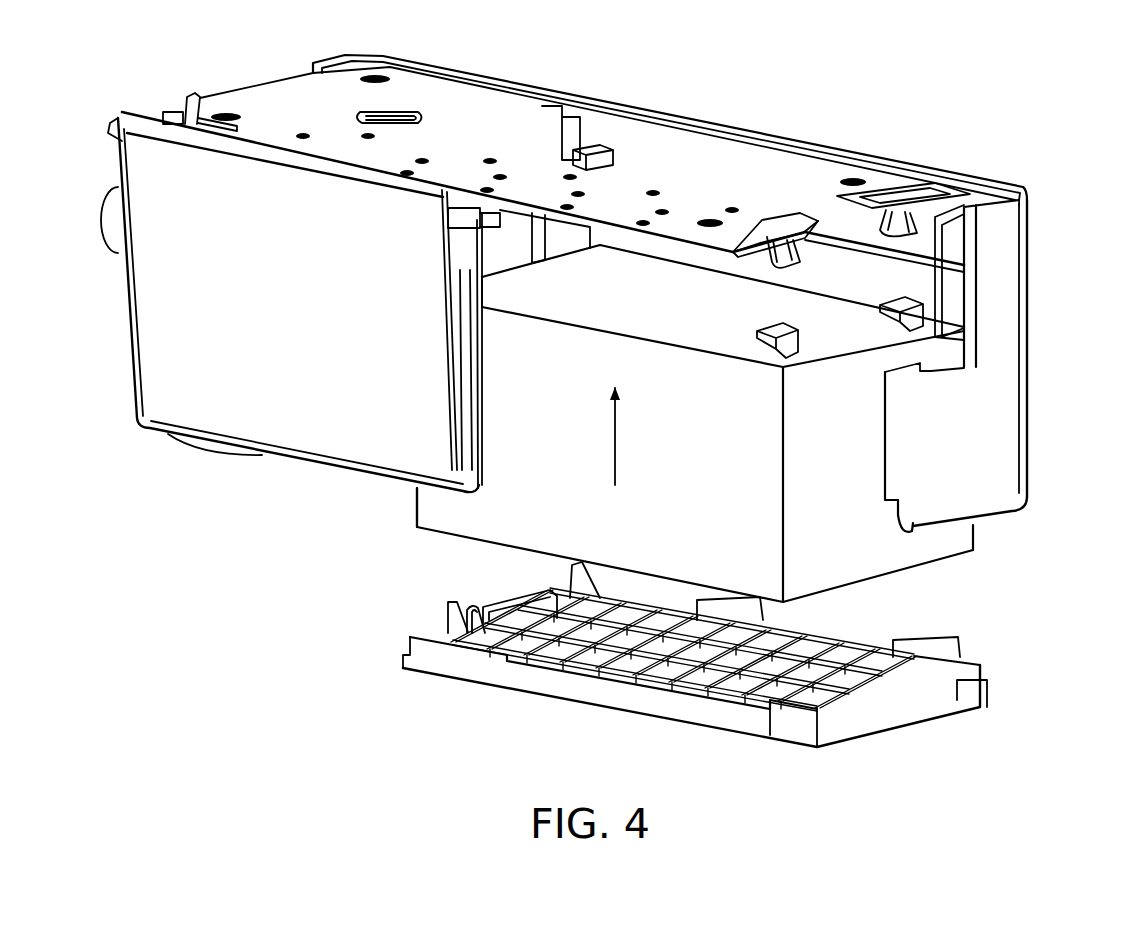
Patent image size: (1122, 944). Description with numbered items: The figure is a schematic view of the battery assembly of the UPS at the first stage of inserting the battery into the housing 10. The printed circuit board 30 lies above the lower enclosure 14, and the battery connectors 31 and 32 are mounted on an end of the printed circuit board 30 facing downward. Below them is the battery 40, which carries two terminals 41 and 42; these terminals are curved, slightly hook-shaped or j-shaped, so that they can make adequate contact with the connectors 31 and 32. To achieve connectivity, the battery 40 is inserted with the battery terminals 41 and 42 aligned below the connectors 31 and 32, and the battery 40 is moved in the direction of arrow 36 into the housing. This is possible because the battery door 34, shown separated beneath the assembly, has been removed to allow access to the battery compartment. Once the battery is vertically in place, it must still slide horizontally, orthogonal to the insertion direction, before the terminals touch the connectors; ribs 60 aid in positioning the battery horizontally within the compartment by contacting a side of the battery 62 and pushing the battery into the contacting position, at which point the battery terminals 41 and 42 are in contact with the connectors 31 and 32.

The housing 10 is at (1026, 119).
The lower enclosure 14 is at (303, 425).
The printed circuit board 30 is at (658, 147).
The battery connector 31 is at (903, 220).
The battery connector 32 is at (774, 245).
The battery door 34 is at (547, 683).
The arrow 36 is at (615, 443).
The battery 40 is at (487, 518).
The battery terminal 41 is at (888, 296).
The battery terminal 42 is at (775, 322).
The rib 60 is at (443, 617).
The side of the battery 62 is at (414, 513).